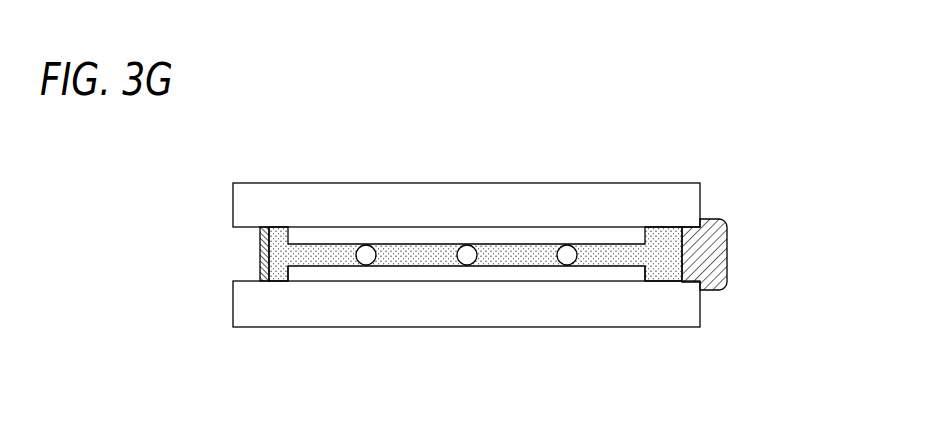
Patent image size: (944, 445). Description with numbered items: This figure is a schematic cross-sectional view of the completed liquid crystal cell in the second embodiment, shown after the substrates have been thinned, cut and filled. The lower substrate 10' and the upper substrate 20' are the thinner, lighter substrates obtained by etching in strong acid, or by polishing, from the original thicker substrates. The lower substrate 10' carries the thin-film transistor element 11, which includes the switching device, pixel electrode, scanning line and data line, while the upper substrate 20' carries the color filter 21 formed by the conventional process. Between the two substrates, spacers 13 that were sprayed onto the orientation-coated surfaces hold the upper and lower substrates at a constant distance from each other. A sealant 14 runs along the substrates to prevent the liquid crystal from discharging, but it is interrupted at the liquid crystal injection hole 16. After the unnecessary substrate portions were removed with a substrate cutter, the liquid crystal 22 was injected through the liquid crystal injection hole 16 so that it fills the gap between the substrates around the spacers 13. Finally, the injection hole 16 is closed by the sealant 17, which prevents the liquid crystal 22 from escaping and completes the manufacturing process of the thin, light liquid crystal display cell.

The lower substrate 10' is at (520, 314).
The thin-film transistor element 11 is at (326, 272).
The spacer 13 is at (567, 254).
The sealant 14 is at (258, 256).
The liquid crystal injection hole 16 is at (662, 247).
The sealant 17 is at (728, 237).
The upper substrate 20' is at (466, 146).
The color filter 21 is at (493, 245).
The liquid crystal 22 is at (330, 248).